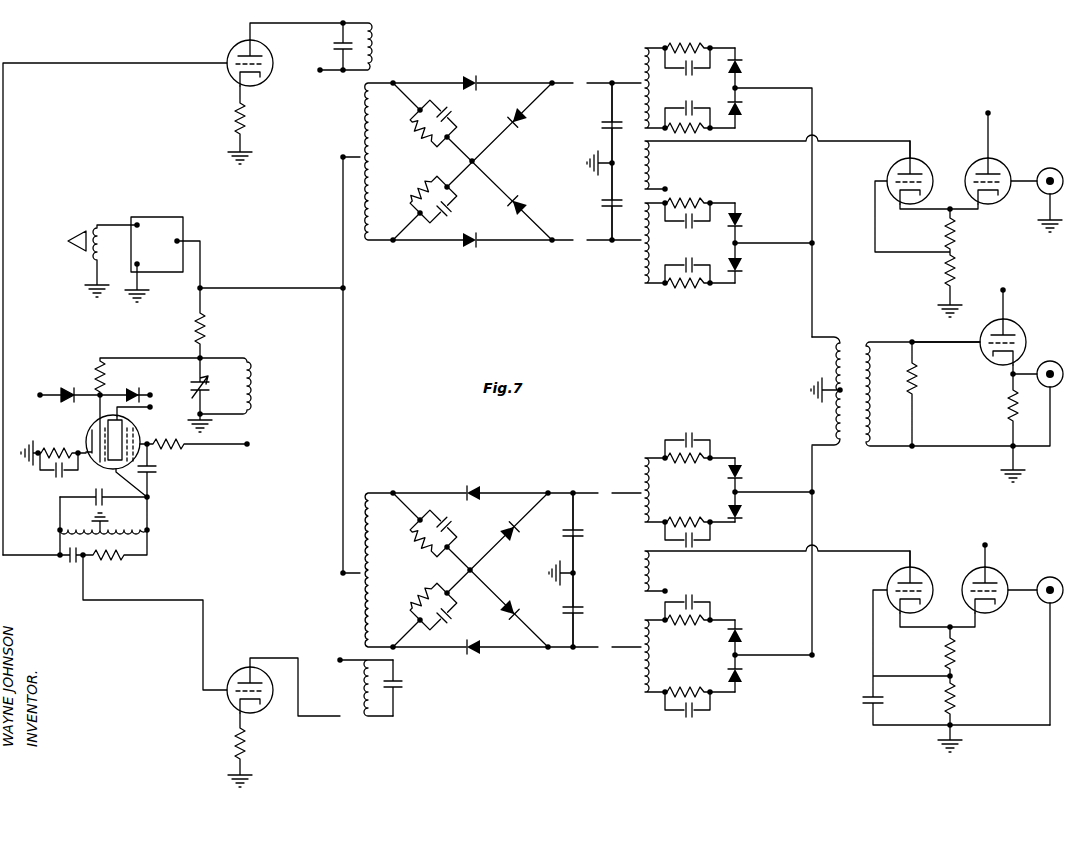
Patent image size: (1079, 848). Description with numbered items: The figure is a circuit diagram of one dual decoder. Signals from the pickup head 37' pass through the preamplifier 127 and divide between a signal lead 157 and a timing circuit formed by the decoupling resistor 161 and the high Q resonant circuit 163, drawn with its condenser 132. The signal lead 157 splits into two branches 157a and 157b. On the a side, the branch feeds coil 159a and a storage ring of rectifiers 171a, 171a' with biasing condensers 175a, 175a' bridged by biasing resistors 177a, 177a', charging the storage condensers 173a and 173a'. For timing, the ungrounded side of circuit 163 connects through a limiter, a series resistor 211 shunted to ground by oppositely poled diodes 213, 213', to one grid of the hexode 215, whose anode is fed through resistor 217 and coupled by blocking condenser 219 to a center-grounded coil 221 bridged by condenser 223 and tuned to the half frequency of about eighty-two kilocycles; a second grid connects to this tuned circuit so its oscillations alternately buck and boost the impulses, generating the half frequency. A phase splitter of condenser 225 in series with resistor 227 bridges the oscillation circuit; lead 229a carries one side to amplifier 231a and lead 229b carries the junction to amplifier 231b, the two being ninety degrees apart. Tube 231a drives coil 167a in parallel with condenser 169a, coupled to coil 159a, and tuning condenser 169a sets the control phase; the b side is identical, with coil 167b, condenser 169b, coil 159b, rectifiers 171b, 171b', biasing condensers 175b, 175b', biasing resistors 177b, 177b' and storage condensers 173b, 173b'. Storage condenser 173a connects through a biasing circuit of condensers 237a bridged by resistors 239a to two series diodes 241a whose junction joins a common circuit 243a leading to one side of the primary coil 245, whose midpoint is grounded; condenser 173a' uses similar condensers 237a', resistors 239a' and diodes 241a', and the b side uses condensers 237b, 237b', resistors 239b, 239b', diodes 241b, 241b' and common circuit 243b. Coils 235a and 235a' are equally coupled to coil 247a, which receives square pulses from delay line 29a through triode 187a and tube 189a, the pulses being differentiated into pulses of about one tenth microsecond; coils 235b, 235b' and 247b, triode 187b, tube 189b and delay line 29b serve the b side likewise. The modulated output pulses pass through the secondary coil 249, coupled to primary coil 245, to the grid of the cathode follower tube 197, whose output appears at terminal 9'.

The lead 229a is at (4, 142).
The amplifier 231a is at (237, 49).
The condenser 169a is at (338, 48).
The coil 167a is at (380, 41).
The pickup head 37' is at (96, 251).
The preamplifier 127 is at (170, 208).
The signal lead 157 is at (260, 287).
The branch 157a is at (341, 247).
The branch 157b is at (346, 441).
The decoupling resistor 161 is at (207, 334).
The series resistor 211 is at (96, 368).
The high Q resonant circuit 163 is at (252, 385).
The variable capacitor 132 is at (212, 395).
The diode 213 is at (62, 401).
The diode 213' is at (134, 392).
The hexode 215 is at (87, 436).
The resistor 217 is at (174, 441).
The blocking condenser 219 is at (156, 482).
The condenser 223 is at (105, 490).
The coil 221 is at (86, 526).
The condenser 225 is at (70, 562).
The resistor 227 is at (94, 563).
The lead 229b is at (190, 601).
The amplifier 231b is at (233, 706).
The coil 167b is at (360, 696).
The condenser 169b is at (396, 691).
The coil 159a is at (364, 132).
The rectifier 171a is at (496, 101).
The rectifier 171a' is at (495, 221).
The biasing condenser 175a' is at (454, 116).
The biasing resistor 177a' is at (413, 136).
The biasing resistor 177a is at (412, 193).
The biasing condenser 175a is at (442, 209).
The storage condenser 173a is at (592, 129).
The storage condenser 173a' is at (590, 201).
The coil 235a is at (632, 88).
The resistor 239a is at (701, 75).
The condenser 237a is at (689, 88).
The diode 241a is at (755, 87).
The coil 247a is at (656, 165).
The coil 235a' is at (631, 244).
The resistor 239a' is at (703, 244).
The condenser 237a' is at (695, 243).
The diode 241a' is at (763, 232).
The common circuit 243a is at (810, 292).
The tube 189a is at (890, 171).
The triode 187a is at (978, 165).
The delay line 29a is at (1042, 196).
The cathode follower tube 197 is at (1016, 324).
The output terminal 9' is at (1039, 393).
The primary coil 245 is at (824, 351).
The secondary coil 249 is at (870, 362).
The common circuit 243b is at (810, 442).
The coil 159b is at (362, 599).
The rectifier 171b is at (495, 513).
The rectifier 171b' is at (496, 627).
The biasing condenser 175b' is at (450, 524).
The biasing resistor 177b' is at (413, 546).
The biasing resistor 177b is at (412, 600).
The biasing condenser 175b is at (447, 615).
The storage condenser 173b is at (559, 539).
The storage condenser 173b' is at (556, 610).
The coil 235b is at (635, 488).
The resistor 239b is at (701, 490).
The condenser 237b is at (668, 483).
The diode 241b is at (757, 490).
The coil 247b is at (638, 579).
The coil 235b' is at (630, 656).
The resistor 239b' is at (701, 656).
The condenser 237b' is at (696, 655).
The diode 241b' is at (759, 654).
The tube 189b is at (898, 580).
The triode 187b is at (980, 568).
The delay line 29b is at (1050, 577).